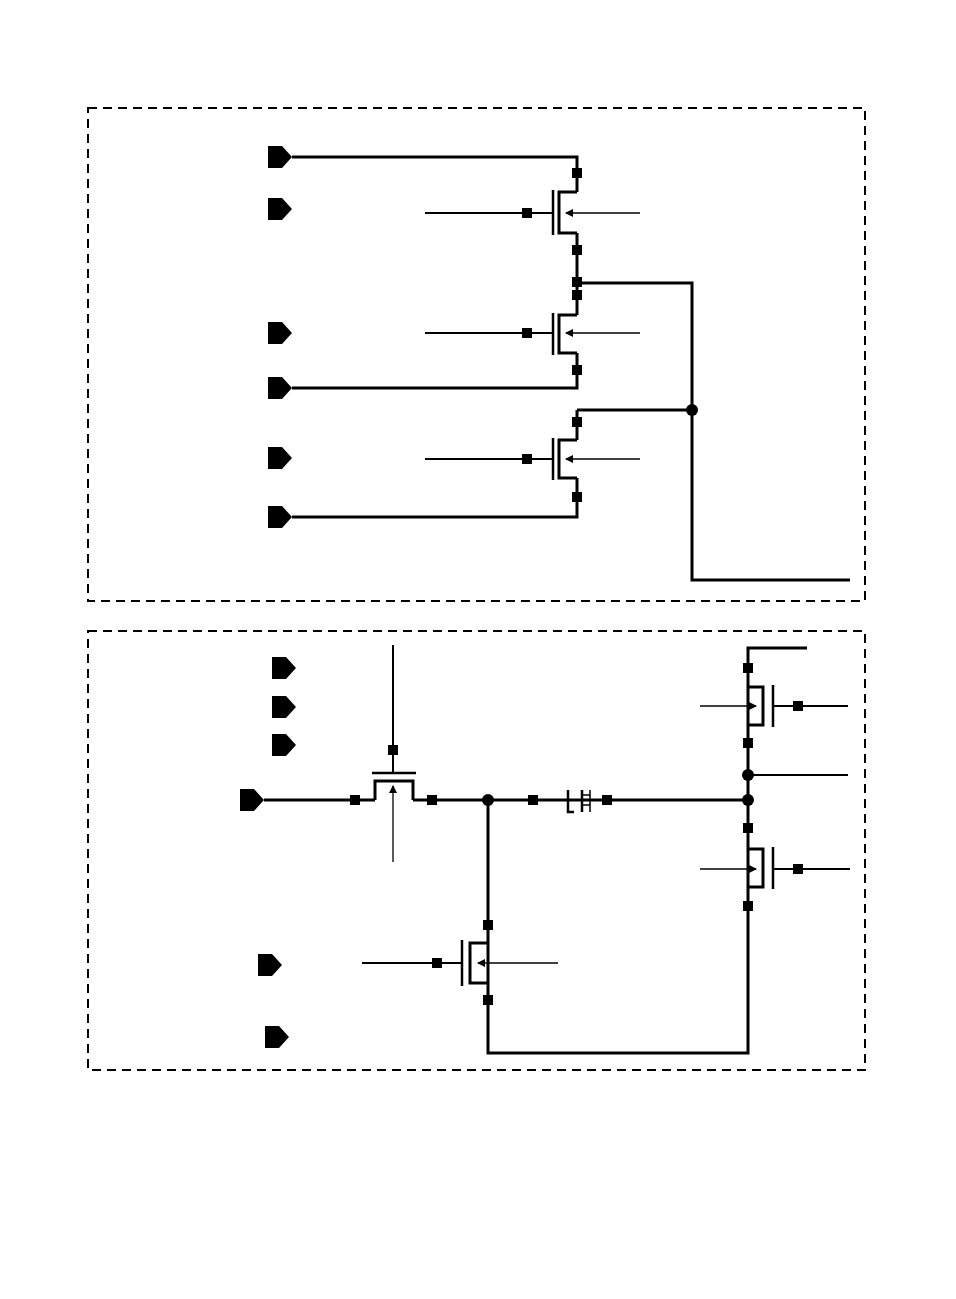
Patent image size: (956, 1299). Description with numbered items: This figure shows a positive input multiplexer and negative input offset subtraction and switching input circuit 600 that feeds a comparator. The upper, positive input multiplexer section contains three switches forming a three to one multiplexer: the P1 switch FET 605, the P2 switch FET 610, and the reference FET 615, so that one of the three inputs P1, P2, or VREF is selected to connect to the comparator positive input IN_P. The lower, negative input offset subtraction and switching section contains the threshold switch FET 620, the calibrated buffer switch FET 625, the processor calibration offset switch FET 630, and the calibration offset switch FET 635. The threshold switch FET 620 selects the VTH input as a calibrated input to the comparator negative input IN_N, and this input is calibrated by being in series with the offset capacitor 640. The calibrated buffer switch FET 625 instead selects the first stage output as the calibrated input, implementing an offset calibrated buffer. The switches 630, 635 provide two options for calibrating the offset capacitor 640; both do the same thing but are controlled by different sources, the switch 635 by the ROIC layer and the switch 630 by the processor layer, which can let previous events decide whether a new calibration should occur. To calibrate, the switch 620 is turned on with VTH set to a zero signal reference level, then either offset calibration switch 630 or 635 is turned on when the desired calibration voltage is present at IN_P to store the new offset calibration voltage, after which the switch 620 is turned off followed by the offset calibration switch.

The positive input multiplexer and negative input offset subtraction and switching i 600 is at (70, 32).
The P1 switch FET 605 is at (588, 188).
The P2 switch FET 610 is at (588, 310).
The reference FET 615 is at (588, 437).
The threshold switch FET 620 is at (404, 764).
The calibrated buffer switch FET 625 is at (455, 972).
The processor calibration offset switch FET 630 is at (736, 673).
The calibration offset switch FET 635 is at (760, 902).
The offset capacitor 640 is at (573, 778).